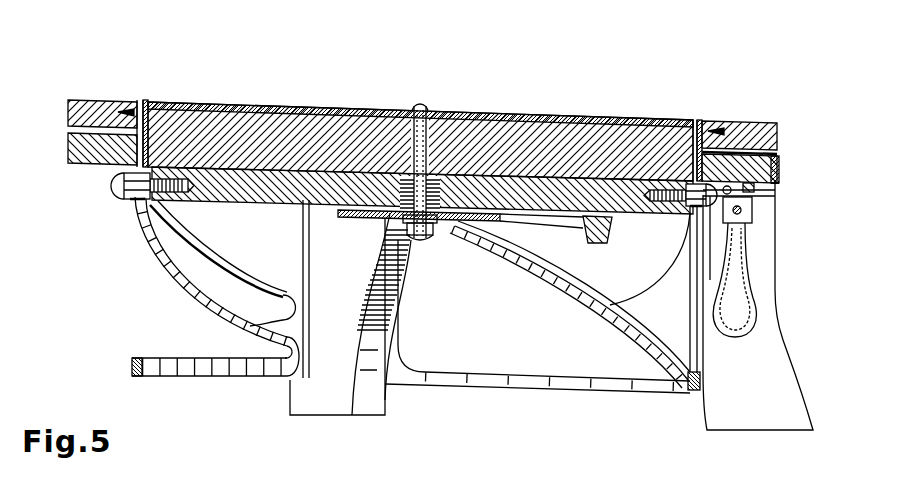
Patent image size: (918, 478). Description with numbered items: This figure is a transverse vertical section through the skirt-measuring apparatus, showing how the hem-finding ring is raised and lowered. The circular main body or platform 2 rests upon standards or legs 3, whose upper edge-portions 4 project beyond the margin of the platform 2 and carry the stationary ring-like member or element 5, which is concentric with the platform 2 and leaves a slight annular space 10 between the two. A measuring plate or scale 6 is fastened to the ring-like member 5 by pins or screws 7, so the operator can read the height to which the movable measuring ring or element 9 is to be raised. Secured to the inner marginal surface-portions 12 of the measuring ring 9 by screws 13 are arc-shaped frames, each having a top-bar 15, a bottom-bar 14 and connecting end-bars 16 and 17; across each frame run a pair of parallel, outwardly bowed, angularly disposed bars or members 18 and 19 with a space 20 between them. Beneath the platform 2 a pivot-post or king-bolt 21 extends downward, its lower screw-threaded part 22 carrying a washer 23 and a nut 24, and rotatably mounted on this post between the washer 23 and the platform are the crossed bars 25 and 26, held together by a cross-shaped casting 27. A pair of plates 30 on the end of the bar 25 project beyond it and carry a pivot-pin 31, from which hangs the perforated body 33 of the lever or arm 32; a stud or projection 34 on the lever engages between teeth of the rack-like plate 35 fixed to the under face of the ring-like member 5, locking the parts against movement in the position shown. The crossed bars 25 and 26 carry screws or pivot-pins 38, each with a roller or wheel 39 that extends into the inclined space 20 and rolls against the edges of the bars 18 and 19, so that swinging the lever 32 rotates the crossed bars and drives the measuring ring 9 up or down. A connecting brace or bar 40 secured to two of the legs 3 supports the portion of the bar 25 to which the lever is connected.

The main body or platform 2 is at (312, 128).
The standards or legs 3 is at (336, 400).
The upper edge-portions of the legs 4 is at (777, 191).
The ring-like member or element 5 is at (68, 148).
The measuring plate or scale 6 is at (781, 163).
The pins or screws 7 is at (781, 180).
The movable measuring ring or element 9 is at (82, 102).
The annular space 10 is at (155, 104).
The inner marginal surface-portions 12 is at (140, 104).
The screws 13 is at (124, 110).
The bottom-bar 14 is at (132, 366).
The top-bar 15 is at (146, 100).
The end-bar 16 is at (399, 331).
The end-bar 17 is at (311, 249).
The angularly disposed bar or member 18 is at (138, 208).
The angularly disposed bar or member 19 is at (168, 128).
The space 20 is at (210, 275).
The pivot-post or king-bolt 21 is at (411, 107).
The lower screw-threaded part 22 is at (440, 222).
The washer 23 is at (372, 262).
The nut 24 is at (425, 240).
The crossed bar 25 is at (538, 178).
The crossed bar 26 is at (445, 187).
The cross-shaped casting 27 is at (462, 223).
The plates 30 is at (678, 255).
The pivot-pin 31 is at (748, 268).
The lever or arm 32 is at (738, 326).
The perforated body 33 is at (770, 300).
The stud or projection 34 is at (752, 232).
The rack-like plate 35 is at (756, 194).
The screws or pivot-pins 38 is at (118, 186).
The roller or wheel 39 is at (132, 200).
The connecting brace or bar 40 is at (614, 276).